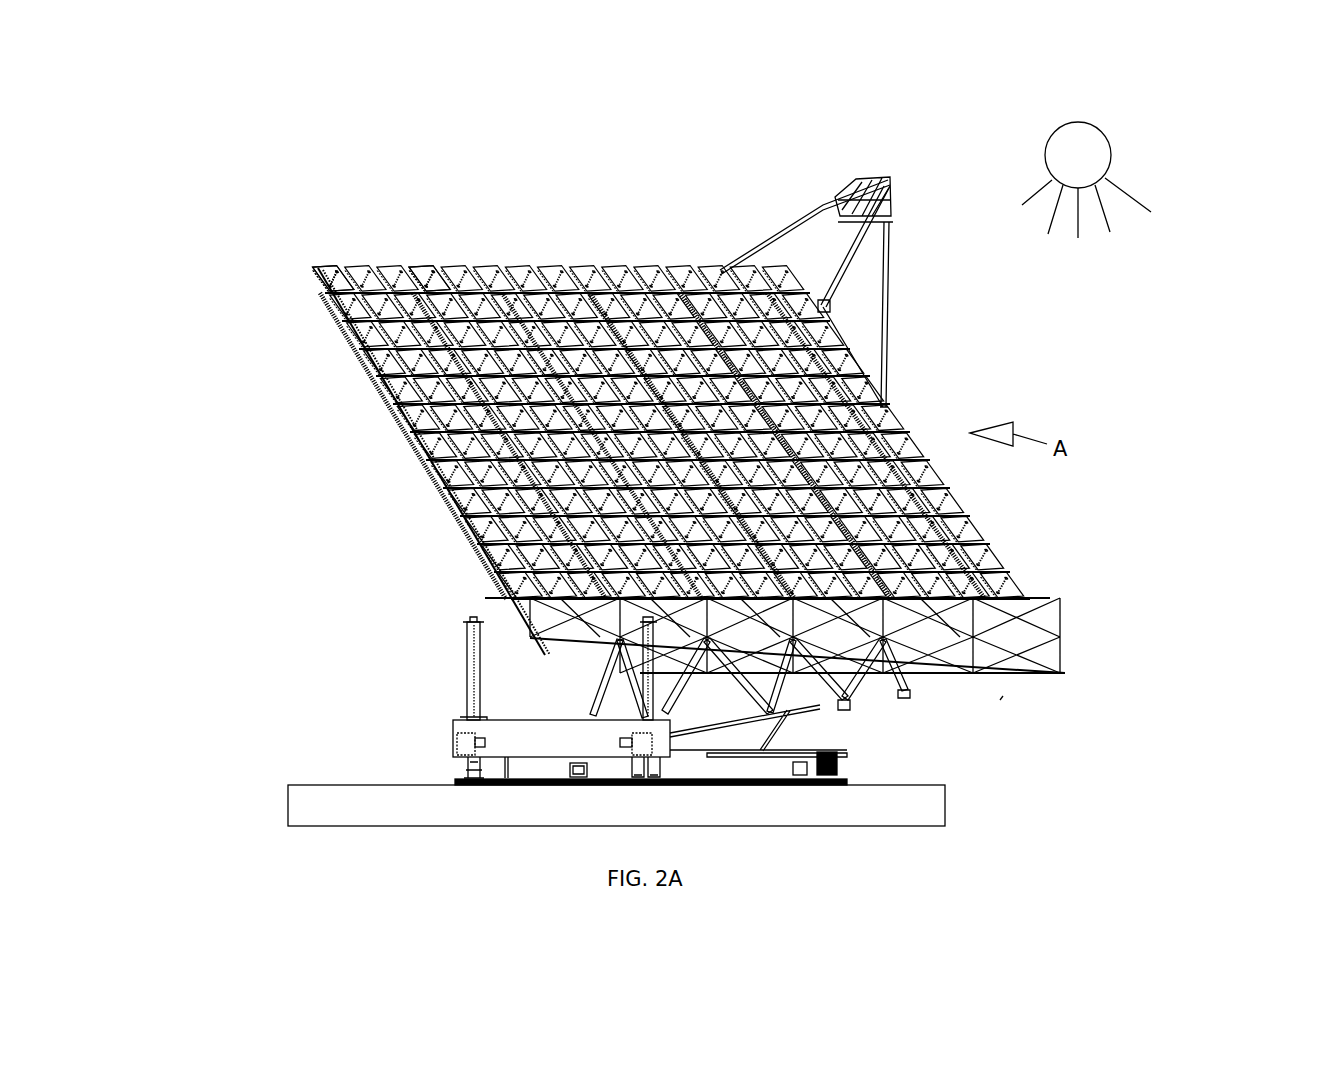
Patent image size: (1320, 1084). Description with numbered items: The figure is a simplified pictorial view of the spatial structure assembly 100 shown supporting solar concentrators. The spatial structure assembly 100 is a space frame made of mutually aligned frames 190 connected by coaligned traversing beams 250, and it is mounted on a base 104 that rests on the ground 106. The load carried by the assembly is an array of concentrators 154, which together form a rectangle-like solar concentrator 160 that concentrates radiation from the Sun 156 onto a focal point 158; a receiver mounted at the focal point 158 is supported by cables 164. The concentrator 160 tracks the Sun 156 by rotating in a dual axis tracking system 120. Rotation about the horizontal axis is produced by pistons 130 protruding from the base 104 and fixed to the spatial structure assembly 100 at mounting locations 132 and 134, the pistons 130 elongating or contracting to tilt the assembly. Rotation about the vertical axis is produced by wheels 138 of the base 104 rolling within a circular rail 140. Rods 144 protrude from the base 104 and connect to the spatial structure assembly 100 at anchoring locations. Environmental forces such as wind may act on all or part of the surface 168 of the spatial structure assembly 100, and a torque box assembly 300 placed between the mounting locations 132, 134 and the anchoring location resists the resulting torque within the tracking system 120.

The spatial structure assembly 100 is at (420, 527).
The base 104 is at (372, 723).
The ground 106 is at (355, 817).
The dual axis tracking system 120 is at (1162, 217).
The pistons 130 is at (855, 695).
The mounting location 132 is at (660, 705).
The mounting location 134 is at (835, 700).
The wheels 138 is at (465, 776).
The circular rail 140 is at (496, 783).
The rods 144 is at (600, 712).
The concentrators 154 is at (318, 268).
The Sun 156 is at (1065, 165).
The focal point 158 is at (889, 180).
The solar concentrator 160 is at (640, 203).
The cables 164 is at (886, 305).
The surface 168 is at (378, 428).
The frames 190 is at (490, 597).
The traversing beams 250 is at (411, 270).
The torque box assembly 300 is at (1000, 700).